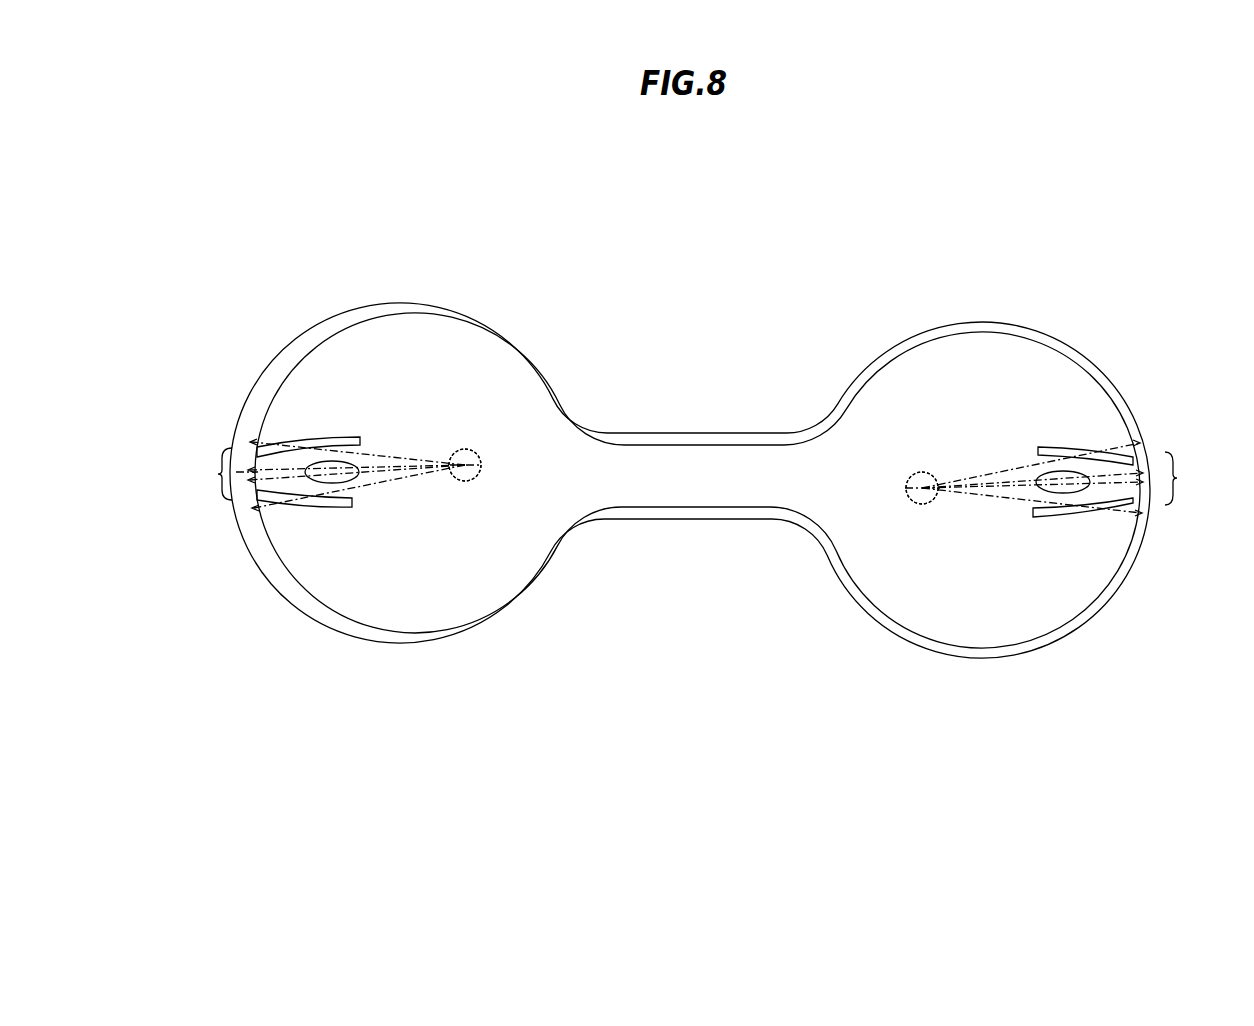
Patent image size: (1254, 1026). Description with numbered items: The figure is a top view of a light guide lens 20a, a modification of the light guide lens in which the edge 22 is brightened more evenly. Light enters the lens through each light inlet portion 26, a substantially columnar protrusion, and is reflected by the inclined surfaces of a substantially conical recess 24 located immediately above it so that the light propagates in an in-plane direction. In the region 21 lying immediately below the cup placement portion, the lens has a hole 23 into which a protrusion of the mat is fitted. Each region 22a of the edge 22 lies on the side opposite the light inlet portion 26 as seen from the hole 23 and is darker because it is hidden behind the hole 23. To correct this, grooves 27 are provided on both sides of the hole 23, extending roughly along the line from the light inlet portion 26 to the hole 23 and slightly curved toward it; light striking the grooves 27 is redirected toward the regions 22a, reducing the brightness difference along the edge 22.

The light guide lens 20a is at (690, 482).
The region 21 is at (432, 335).
The edge 22 is at (925, 638).
The region 22a is at (697, 477).
The hole 23 is at (318, 481).
The substantially conical recess 24 is at (470, 452).
The light inlet portion 26 is at (473, 479).
The groove 27 is at (340, 440).